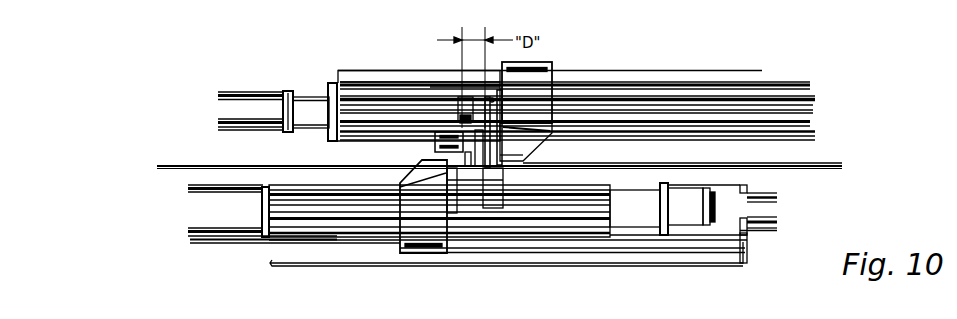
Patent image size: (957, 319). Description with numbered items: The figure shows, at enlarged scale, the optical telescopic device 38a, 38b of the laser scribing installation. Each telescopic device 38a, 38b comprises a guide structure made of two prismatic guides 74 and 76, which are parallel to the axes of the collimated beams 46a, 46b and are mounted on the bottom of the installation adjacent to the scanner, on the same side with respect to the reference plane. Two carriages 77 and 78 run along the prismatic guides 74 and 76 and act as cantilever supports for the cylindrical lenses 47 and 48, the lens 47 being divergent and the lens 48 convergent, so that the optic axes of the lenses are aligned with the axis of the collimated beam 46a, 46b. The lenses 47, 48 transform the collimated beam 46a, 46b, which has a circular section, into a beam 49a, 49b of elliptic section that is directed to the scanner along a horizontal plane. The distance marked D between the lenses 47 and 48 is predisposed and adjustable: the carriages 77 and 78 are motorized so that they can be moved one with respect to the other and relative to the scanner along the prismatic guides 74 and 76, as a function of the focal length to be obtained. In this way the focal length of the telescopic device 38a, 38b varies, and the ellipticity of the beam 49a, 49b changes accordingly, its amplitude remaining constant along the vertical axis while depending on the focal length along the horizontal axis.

The prismatic guide 76 is at (357, 83).
The carriage 78 is at (562, 57).
The optical telescopic device 38a is at (628, 88).
The optical telescopic device 38b is at (822, 65).
The beam of elliptic section 49a is at (487, 144).
The beam of elliptic section 49b is at (203, 164).
The convergent cylindrical lens 48 is at (412, 153).
The divergent cylindrical lens 47 is at (545, 157).
The prismatic guide 74 is at (285, 238).
The carriage 77 is at (385, 250).
The collimated beam 46a is at (734, 201).
The collimated beam 46b is at (787, 168).